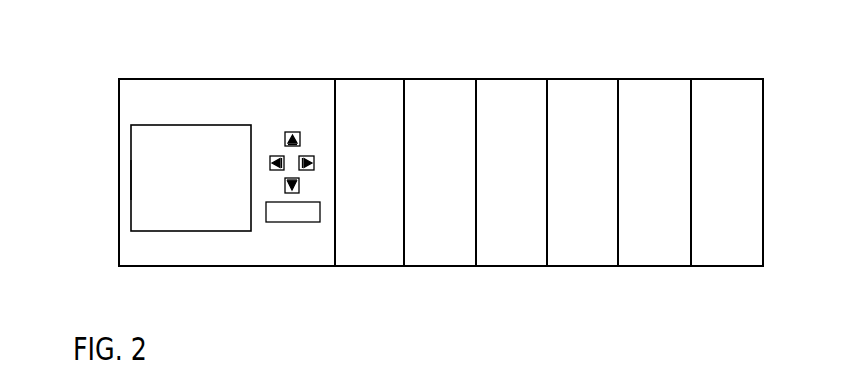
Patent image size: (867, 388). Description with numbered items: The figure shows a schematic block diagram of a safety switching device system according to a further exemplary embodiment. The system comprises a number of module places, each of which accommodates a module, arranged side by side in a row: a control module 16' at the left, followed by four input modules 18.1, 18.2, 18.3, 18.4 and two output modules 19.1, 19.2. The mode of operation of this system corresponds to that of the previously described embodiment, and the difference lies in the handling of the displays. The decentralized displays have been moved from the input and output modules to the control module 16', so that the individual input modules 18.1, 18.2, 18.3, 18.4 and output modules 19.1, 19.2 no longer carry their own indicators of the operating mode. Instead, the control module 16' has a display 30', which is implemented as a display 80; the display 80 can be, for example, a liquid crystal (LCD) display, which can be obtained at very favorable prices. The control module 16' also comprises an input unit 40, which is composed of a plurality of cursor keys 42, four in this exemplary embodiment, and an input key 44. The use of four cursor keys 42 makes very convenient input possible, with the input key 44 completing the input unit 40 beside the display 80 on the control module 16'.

The control module 16' is at (441, 211).
The display 30' is at (153, 157).
The display 80 is at (128, 177).
The input unit 40 is at (310, 247).
The cursor keys 42 is at (305, 143).
The input key 44 is at (284, 222).
The input module 18.1 is at (382, 268).
The input module 18.2 is at (452, 268).
The input module 18.3 is at (513, 268).
The input module 18.4 is at (583, 268).
The output module 19.1 is at (655, 268).
The output module 19.2 is at (728, 268).